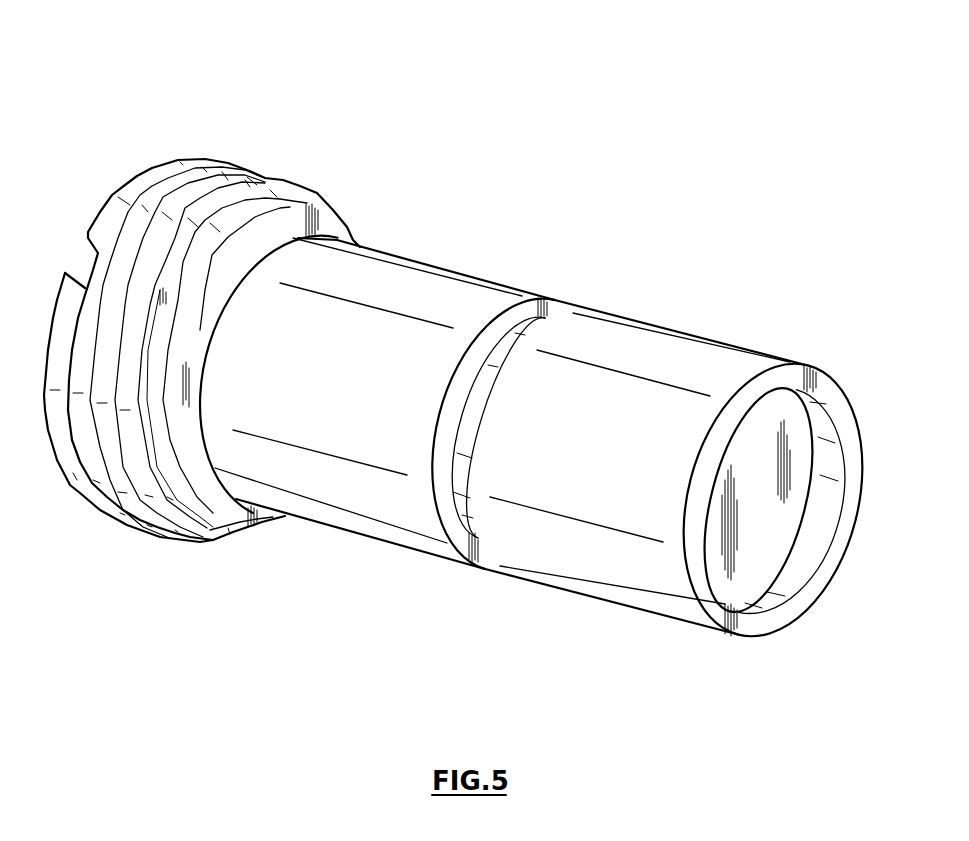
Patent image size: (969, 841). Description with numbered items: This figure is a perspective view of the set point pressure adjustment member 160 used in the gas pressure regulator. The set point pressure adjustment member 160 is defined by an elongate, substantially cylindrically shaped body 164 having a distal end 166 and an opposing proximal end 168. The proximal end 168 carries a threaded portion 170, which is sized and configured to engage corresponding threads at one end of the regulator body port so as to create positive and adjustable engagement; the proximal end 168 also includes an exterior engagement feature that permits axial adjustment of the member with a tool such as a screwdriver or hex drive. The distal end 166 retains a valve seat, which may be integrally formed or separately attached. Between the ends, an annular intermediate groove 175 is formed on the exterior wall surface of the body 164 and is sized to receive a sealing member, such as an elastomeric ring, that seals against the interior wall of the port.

The set point pressure adjustment member 160 is at (259, 30).
The threaded portion 170 is at (171, 183).
The proximal end 168 is at (212, 517).
The annular intermediate groove 175 is at (485, 558).
The distal end 166 is at (658, 342).
The body 164 is at (757, 626).